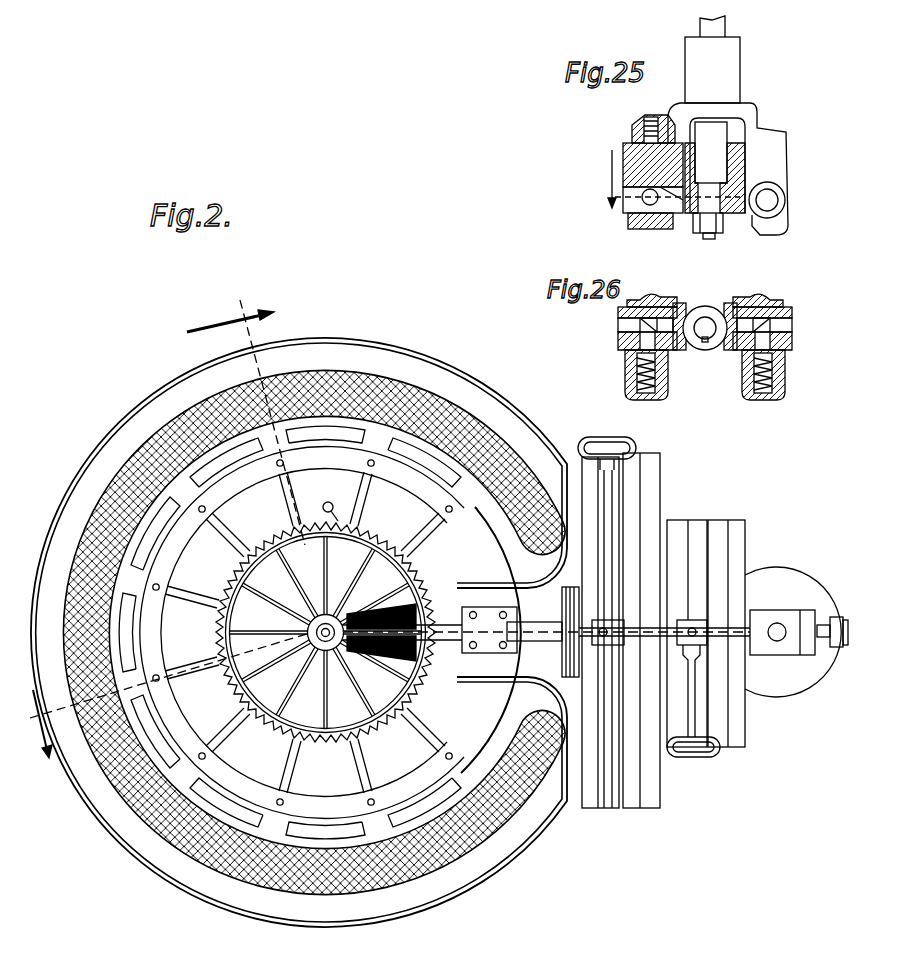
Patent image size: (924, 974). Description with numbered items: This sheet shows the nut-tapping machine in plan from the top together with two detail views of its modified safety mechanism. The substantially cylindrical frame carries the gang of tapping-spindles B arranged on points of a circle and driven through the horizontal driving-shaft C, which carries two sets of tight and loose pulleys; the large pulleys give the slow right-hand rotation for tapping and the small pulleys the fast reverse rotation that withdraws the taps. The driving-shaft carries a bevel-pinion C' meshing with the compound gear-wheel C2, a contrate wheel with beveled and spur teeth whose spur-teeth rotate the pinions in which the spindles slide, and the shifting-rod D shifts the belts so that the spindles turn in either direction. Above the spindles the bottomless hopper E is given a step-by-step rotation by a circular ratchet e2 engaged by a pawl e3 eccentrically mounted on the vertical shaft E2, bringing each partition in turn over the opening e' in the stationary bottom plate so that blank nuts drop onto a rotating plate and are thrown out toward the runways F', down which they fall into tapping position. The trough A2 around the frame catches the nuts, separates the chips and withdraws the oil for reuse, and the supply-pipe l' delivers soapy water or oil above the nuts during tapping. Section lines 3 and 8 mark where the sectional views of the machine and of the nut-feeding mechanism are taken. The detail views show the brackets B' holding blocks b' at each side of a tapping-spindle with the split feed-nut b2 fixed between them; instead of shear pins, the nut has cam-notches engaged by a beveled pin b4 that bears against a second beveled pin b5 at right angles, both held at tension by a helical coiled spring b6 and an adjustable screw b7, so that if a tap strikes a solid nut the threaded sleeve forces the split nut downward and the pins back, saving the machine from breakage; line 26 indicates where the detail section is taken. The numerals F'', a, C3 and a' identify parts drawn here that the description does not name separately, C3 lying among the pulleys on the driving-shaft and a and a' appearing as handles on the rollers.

In FIG. 2, the trough A2 is at (132, 432).
In FIG. 2, the section line 8 is at (246, 415).
In FIG. 2, the section line 3 is at (757, 656).
In FIG. 2, the supply-pipe l' is at (302, 632).
In FIG. 2, the vertical shaft E2 is at (352, 518).
In FIG. 2, the runways F' is at (305, 725).
In FIG. 2, the frame spokes F'' is at (305, 540).
In FIG. 2, the hopper E is at (418, 660).
In FIG. 2, the circular ratchet e2 is at (300, 527).
In FIG. 2, the pawl e3 is at (326, 502).
In FIG. 2, the opening e' is at (406, 619).
In FIG. 2, the shifting-rod D is at (516, 622).
In FIG. 2, the handle a is at (607, 438).
In FIG. 2, the horizontal driving-shaft C is at (600, 651).
In FIG. 2, the bevel-pinion C' is at (641, 649).
In FIG. 2, the compound gear-wheel C2 is at (690, 521).
In FIG. 2, the roller C3 is at (735, 521).
In FIG. 2, the handle a' is at (693, 718).
In FIG. 25, the tapping-spindles B is at (733, 28).
In FIG. 25, the brackets B' is at (729, 138).
In FIG. 25, the blocks b' is at (664, 172).
In FIG. 25, the section line 26 is at (600, 180).
In FIG. 25, the second beveled pin b5 is at (630, 222).
In FIG. 26, the second beveled pin b5 is at (622, 345).
In FIG. 25, the beveled pin b4 is at (664, 232).
In FIG. 26, the beveled pin b4 is at (658, 300).
In FIG. 26, the helical coiled spring b6 is at (630, 368).
In FIG. 26, the adjustable screw b7 is at (660, 392).
In FIG. 26, the split feed-nut b2 is at (694, 353).